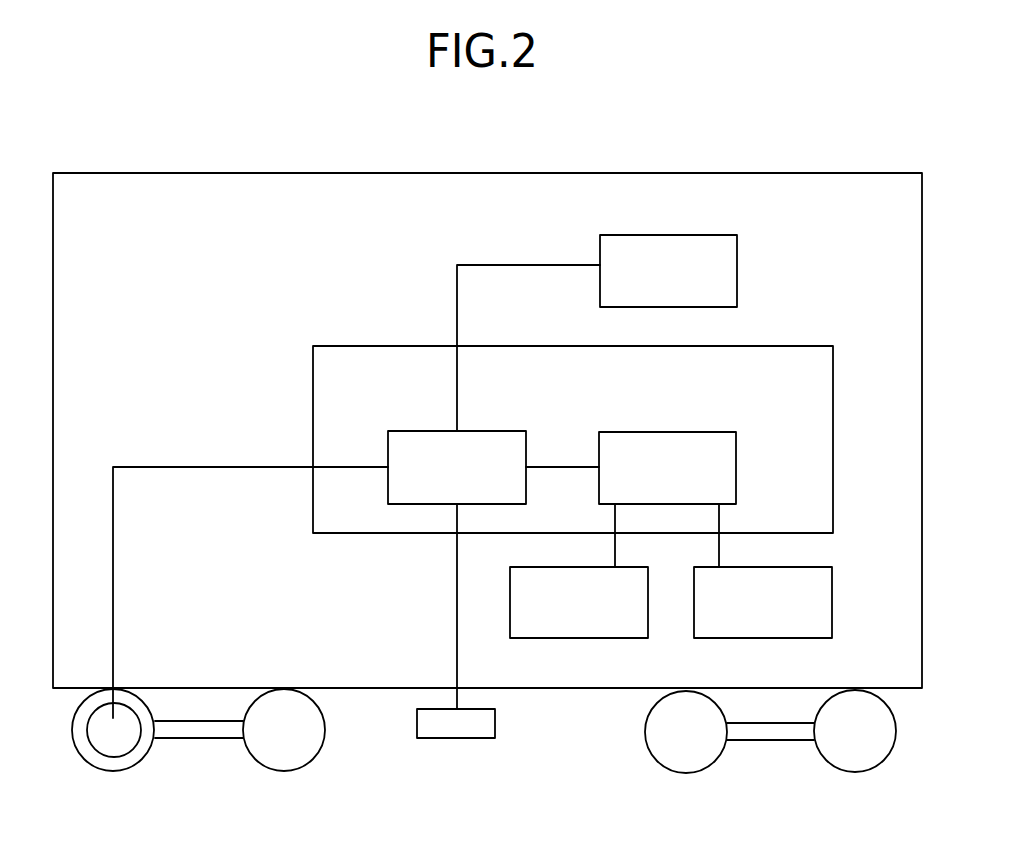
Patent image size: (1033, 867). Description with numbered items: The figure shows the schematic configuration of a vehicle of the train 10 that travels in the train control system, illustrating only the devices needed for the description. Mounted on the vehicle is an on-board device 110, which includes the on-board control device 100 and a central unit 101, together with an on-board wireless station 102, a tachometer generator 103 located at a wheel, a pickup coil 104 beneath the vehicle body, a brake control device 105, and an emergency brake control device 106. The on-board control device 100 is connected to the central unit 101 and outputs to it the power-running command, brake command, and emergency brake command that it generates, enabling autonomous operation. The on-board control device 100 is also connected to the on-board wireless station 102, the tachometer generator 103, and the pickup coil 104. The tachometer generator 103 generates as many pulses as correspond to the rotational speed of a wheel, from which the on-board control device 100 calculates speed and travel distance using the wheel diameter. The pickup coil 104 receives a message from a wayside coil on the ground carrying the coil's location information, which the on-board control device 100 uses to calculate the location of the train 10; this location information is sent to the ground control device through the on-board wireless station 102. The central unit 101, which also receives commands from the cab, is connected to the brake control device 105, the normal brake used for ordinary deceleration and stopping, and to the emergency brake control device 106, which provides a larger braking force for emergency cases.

The train 10 is at (110, 168).
The on-board device 110 is at (768, 343).
The on-board control device 100 is at (505, 431).
The central unit 101 is at (716, 432).
The on-board wireless station 102 is at (723, 275).
The tachometer generator 103 is at (113, 743).
The pickup coil 104 is at (477, 722).
The brake control device 105 is at (615, 625).
The emergency brake control device 106 is at (793, 619).